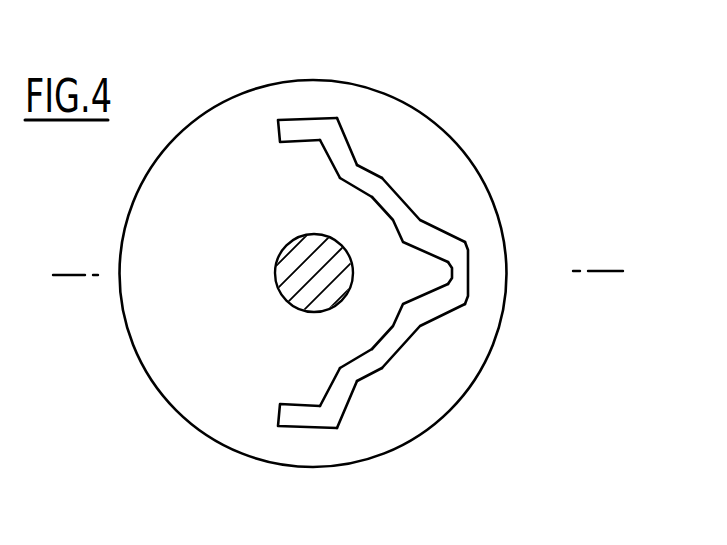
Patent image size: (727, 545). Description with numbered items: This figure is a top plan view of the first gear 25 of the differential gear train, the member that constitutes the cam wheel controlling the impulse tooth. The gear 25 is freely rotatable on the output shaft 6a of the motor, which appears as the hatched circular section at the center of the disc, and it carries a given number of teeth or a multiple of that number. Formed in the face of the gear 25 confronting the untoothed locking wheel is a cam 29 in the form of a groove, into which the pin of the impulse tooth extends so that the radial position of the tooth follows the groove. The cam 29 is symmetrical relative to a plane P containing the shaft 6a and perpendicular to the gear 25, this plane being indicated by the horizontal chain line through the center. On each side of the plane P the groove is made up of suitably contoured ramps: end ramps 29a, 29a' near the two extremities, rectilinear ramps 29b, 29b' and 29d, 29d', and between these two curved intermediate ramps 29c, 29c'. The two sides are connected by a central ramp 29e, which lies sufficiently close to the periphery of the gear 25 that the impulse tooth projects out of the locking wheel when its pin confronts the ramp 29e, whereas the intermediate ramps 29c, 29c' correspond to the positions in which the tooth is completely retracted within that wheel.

The first gear 25 is at (167, 400).
The output shaft 6a is at (299, 296).
The cam 29 is at (422, 268).
The ramp 29a is at (314, 89).
The rectilinear ramp 29b is at (390, 125).
The intermediate ramp 29c is at (434, 159).
The rectilinear ramp 29d is at (465, 212).
The central ramp 29e is at (452, 277).
The rectilinear ramp 29d' is at (466, 332).
The intermediate ramp 29c' is at (438, 384).
The rectilinear ramp 29b' is at (410, 411).
The ramp 29a' is at (319, 451).
The plane P is at (596, 270).